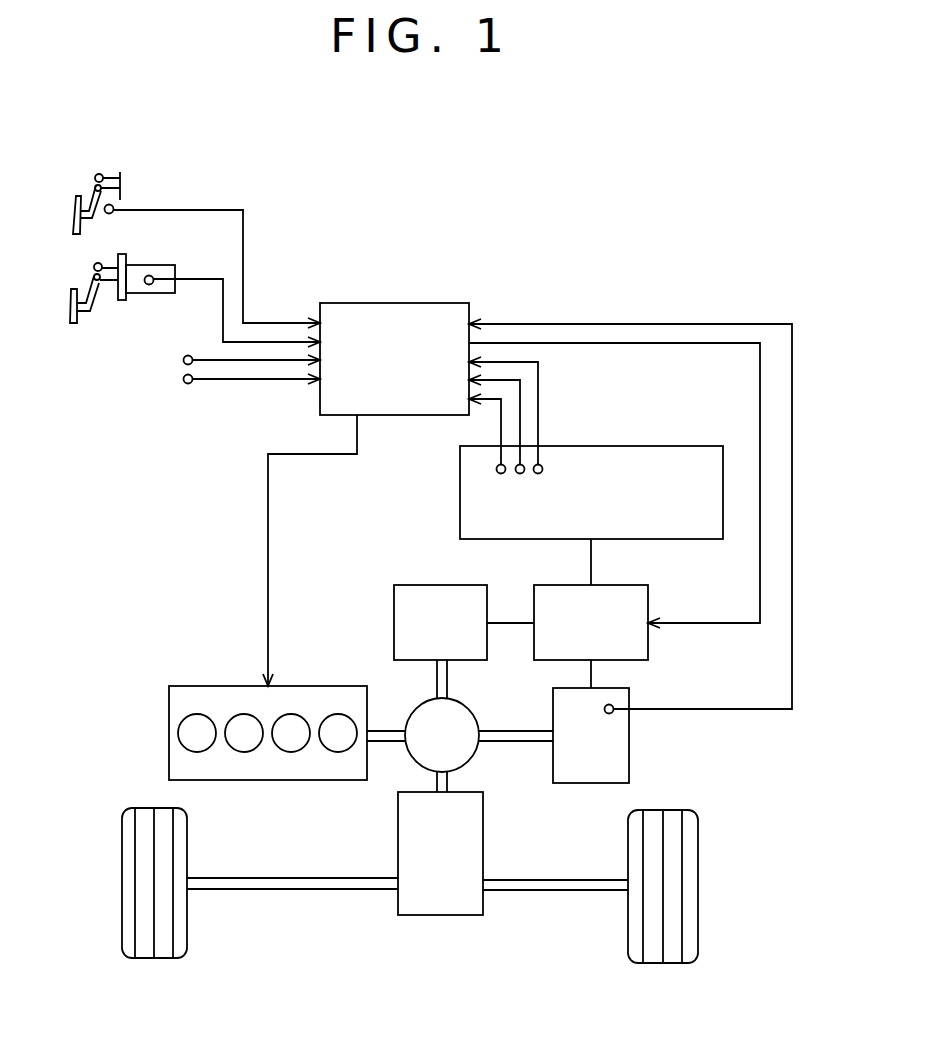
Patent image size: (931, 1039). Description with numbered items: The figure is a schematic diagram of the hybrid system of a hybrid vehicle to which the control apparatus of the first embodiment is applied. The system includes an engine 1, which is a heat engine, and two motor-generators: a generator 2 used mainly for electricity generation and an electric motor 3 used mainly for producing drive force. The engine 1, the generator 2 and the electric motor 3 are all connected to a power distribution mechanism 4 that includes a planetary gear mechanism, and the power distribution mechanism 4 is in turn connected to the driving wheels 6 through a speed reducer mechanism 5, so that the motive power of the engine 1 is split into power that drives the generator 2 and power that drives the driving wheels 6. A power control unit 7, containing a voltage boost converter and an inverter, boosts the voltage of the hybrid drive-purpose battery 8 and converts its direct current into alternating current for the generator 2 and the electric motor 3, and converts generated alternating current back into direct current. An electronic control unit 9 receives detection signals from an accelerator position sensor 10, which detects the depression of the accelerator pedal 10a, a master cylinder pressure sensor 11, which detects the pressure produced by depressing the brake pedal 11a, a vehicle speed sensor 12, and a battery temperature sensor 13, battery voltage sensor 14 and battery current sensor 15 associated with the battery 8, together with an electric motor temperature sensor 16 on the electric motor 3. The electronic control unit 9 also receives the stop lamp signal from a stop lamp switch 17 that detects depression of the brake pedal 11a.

The engine 1 is at (300, 780).
The generator 2 is at (410, 585).
The electric motor 3 is at (629, 742).
The power distribution mechanism 4 is at (414, 706).
The speed reducer mechanism 5 is at (398, 818).
The driving wheels 6 is at (160, 958).
The power control unit 7 is at (648, 648).
The hybrid drive-purpose battery 8 is at (686, 446).
The electronic control unit 9 is at (394, 303).
The accelerator position sensor 10 is at (109, 214).
The accelerator pedal 10a is at (70, 214).
The master cylinder pressure sensor 11 is at (153, 277).
The brake pedal 11a is at (84, 325).
The vehicle speed sensor 12 is at (184, 360).
The battery temperature sensor 13 is at (501, 474).
The battery voltage sensor 14 is at (520, 474).
The battery current sensor 15 is at (541, 474).
The electric motor temperature sensor 16 is at (604, 709).
The stop lamp switch 17 is at (184, 380).